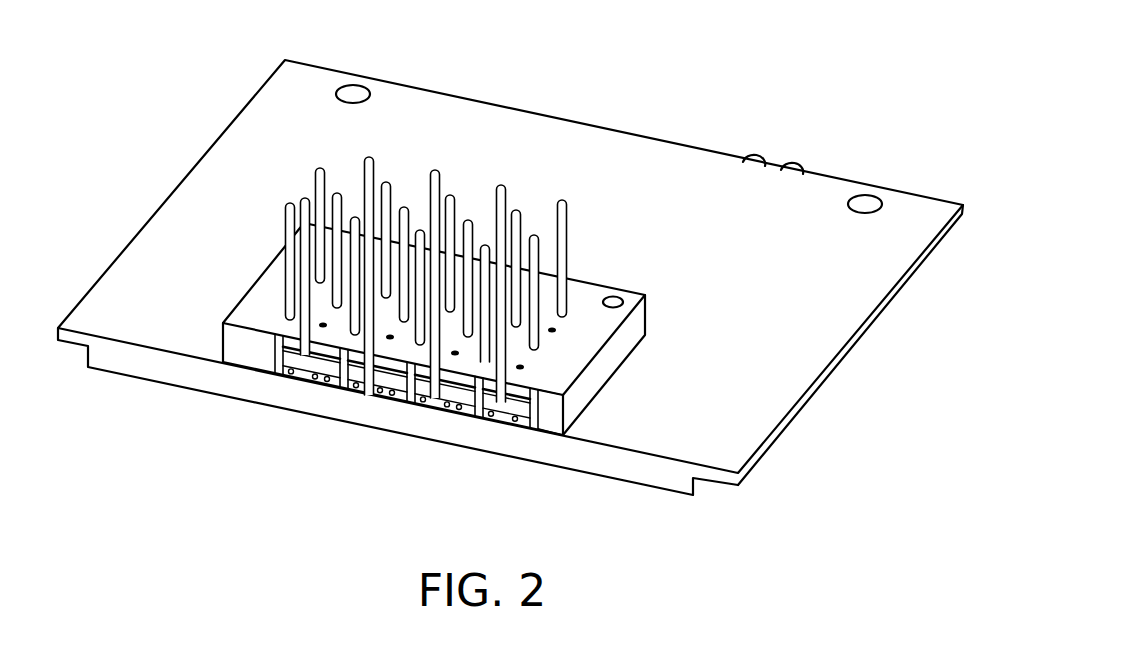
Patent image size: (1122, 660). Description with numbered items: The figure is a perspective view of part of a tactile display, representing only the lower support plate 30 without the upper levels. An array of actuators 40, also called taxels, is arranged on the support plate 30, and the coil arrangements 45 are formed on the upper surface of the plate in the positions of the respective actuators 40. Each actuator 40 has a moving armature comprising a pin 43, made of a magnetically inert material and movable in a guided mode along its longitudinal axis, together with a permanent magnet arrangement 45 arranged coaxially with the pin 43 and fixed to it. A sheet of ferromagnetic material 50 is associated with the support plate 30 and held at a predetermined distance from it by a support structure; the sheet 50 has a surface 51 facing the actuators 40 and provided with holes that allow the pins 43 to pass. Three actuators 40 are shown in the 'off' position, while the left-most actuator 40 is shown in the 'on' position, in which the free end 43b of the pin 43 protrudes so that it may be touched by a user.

The support plate 30 is at (838, 376).
The sheet of ferromagnetic material 50 is at (585, 305).
The actuator 40 is at (380, 424).
The permanent magnet arrangement 45 is at (295, 352).
The pin 43 is at (338, 238).
The free end 43b is at (303, 197).
The surface 51 is at (547, 404).